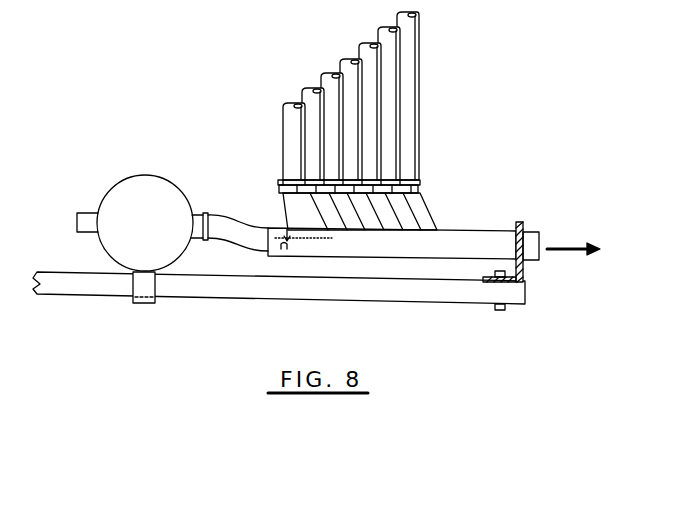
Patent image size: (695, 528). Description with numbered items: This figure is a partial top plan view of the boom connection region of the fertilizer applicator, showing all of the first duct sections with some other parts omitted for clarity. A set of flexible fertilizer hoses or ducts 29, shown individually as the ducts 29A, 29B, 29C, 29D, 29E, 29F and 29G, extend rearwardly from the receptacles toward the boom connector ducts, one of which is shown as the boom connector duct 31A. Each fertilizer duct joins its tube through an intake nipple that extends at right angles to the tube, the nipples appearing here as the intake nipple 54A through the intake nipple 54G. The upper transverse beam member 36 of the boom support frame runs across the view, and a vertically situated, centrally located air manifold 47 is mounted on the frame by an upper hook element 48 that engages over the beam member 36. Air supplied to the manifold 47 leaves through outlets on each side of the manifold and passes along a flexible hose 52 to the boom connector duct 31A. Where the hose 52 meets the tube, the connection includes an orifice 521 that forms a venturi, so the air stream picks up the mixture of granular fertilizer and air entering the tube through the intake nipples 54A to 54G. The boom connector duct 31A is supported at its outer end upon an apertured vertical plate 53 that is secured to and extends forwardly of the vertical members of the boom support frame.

The flexible hose or duct 29 is at (365, 102).
The flexible hose or duct 29A is at (288, 142).
The flexible hose or duct 29B is at (308, 115).
The flexible hose or duct 29C is at (318, 78).
The flexible hose or duct 29D is at (340, 65).
The flexible hose or duct 29E is at (360, 52).
The flexible hose or duct 29F is at (390, 103).
The flexible hose or duct 29G is at (413, 45).
The boom connector duct 31A is at (392, 232).
The upper transverse beam member 36 is at (442, 297).
The air manifold 47 is at (112, 203).
The upper hook element 48 is at (135, 302).
The flexible hose 52 is at (244, 238).
The orifice 521 is at (273, 223).
The apertured vertical plate 53 is at (523, 268).
The intake nipple 54A is at (285, 203).
The intake nipple 54G is at (423, 218).